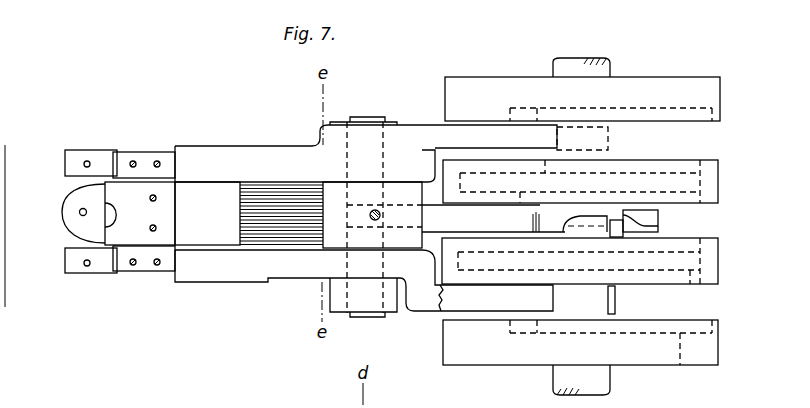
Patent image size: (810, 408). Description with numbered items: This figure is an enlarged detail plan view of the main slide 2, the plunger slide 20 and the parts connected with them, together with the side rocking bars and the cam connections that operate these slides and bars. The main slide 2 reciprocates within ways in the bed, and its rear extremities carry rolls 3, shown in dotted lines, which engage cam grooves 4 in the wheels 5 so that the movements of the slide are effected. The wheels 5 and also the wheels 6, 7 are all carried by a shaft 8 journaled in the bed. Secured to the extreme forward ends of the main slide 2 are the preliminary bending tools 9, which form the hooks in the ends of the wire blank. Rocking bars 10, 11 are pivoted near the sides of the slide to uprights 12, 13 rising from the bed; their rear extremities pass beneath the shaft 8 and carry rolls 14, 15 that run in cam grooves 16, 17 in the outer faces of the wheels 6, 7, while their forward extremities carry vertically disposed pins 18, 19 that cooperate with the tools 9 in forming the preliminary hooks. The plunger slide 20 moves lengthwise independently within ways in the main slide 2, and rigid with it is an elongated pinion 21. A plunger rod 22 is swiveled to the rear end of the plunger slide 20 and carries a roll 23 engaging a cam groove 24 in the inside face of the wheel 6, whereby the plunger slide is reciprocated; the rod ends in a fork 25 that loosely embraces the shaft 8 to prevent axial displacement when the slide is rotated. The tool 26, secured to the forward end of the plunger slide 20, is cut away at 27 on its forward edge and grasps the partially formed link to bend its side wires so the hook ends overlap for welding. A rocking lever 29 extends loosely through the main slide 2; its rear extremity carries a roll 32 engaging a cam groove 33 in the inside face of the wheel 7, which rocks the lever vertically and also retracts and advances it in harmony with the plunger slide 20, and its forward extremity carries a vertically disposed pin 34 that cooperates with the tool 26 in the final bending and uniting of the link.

The main slide 2 is at (366, 218).
The rolls 3 is at (515, 105).
The cam grooves 4 is at (660, 105).
The wheels 5 is at (720, 80).
The wheel 6 is at (720, 180).
The wheel 7 is at (720, 276).
The shaft 8 is at (611, 60).
The preliminary bending tools 9 is at (133, 152).
The rocking bar 10 is at (70, 152).
The rocking bar 11 is at (66, 276).
The upright 12 is at (400, 123).
The upright 13 is at (373, 305).
The roll 14 is at (603, 166).
The roll 15 is at (622, 288).
The cam groove 16 is at (680, 172).
The cam groove 17 is at (695, 284).
The pin 18 is at (88, 160).
The pin 19 is at (88, 268).
The plunger slide 20 is at (298, 217).
The elongated pinion 21 is at (267, 236).
The plunger rod 22 is at (493, 218).
The roll 23 is at (417, 156).
The cam groove 24 is at (690, 192).
The fork 25 is at (657, 214).
The tool 26 is at (140, 213).
The cut-away 27 is at (112, 216).
The rocking lever 29 is at (72, 198).
The roll 32 is at (640, 238).
The cam groove 33 is at (700, 262).
The pin 34 is at (79, 213).